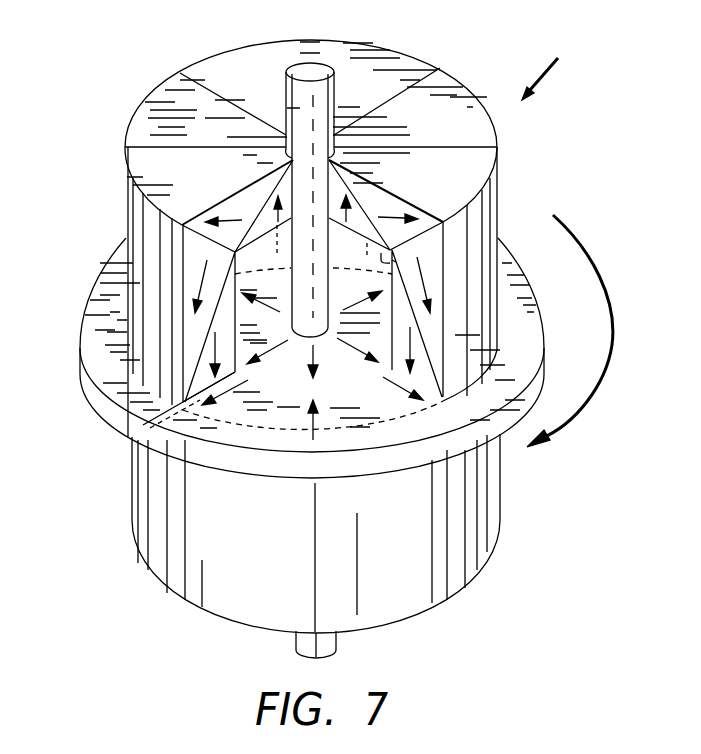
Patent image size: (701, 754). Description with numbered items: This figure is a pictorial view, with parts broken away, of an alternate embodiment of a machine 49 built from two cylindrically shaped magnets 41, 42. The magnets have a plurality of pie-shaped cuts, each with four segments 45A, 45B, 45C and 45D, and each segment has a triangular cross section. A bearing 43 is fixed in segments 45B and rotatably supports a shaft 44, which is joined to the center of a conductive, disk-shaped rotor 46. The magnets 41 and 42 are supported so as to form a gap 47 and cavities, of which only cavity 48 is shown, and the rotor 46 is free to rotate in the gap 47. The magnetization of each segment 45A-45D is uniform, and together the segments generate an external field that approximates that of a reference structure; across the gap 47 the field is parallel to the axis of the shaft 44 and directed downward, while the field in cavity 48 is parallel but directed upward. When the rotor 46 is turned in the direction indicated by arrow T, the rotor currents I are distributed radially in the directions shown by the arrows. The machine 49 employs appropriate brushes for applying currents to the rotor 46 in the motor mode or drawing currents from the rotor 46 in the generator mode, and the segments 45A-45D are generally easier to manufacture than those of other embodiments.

The cylindrically shaped magnet 41 is at (125, 153).
The cylindrically shaped magnet 42 is at (178, 582).
The bearing 43 is at (283, 143).
The shaft 44 is at (332, 97).
The segment 45A is at (135, 435).
The segment 45B is at (190, 337).
The segment 45C is at (232, 207).
The segment 45D is at (260, 157).
The rotor 46 is at (520, 340).
The gap 47 is at (443, 397).
The cavity 48 is at (395, 258).
The machine 49 is at (552, 69).
The arrow indicating direction of rotor rotation T is at (612, 365).
The rotor currents I is at (300, 366).